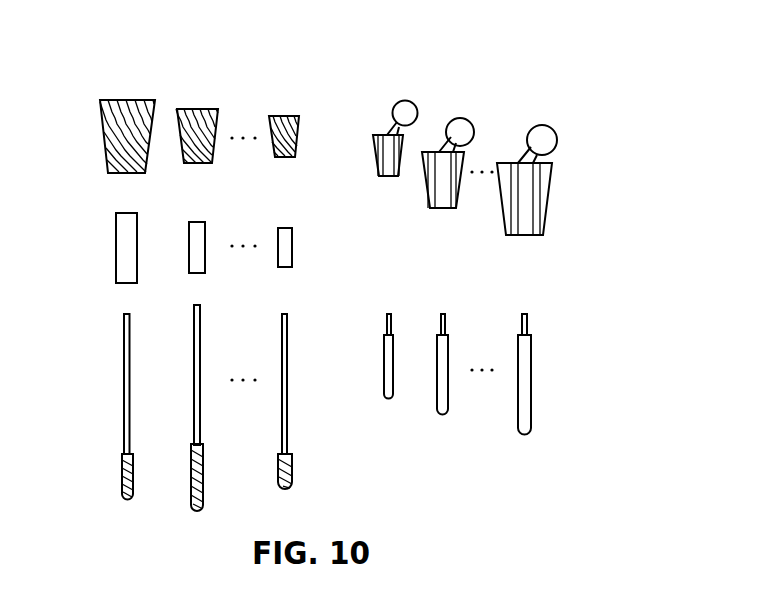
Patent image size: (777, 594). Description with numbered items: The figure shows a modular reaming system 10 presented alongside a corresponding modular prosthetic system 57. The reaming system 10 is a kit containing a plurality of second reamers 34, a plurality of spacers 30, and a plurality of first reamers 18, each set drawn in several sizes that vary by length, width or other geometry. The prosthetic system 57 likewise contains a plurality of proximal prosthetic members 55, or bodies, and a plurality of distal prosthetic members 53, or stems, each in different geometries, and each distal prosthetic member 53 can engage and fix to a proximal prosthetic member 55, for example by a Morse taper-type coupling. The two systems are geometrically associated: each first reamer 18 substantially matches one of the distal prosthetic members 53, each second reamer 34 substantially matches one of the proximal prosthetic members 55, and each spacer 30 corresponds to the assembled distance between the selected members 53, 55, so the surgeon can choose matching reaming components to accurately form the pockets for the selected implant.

The reaming system 10 is at (240, 78).
The modular prosthetic system 57 is at (507, 78).
The second reamer 34 is at (92, 85).
The spacer 30 is at (92, 197).
The first reamer 18 is at (92, 313).
The proximal prosthetic member 55 is at (367, 98).
The distal prosthetic member 53 is at (367, 305).